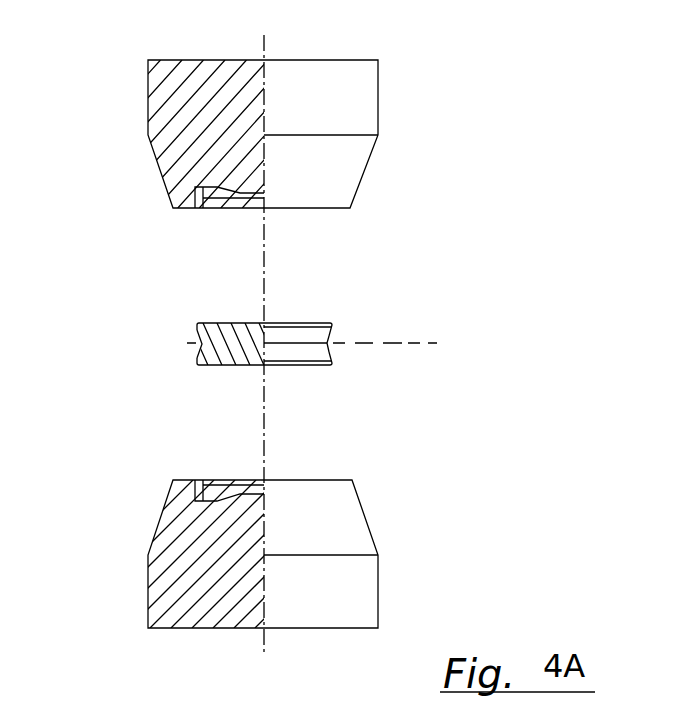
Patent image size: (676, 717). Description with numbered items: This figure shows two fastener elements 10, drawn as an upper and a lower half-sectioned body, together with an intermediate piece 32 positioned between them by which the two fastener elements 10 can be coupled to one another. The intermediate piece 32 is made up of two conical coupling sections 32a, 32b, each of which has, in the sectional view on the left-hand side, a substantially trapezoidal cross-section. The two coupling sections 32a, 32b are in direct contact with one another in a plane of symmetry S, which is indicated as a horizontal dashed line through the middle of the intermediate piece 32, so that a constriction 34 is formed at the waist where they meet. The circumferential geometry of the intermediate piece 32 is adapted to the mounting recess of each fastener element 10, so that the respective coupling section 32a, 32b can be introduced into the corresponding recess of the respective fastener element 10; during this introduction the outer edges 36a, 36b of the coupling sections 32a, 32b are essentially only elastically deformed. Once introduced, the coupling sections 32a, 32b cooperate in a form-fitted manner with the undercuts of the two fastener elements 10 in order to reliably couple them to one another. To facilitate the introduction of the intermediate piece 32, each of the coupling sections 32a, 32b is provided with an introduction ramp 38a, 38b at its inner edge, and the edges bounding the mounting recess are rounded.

The fastener element 10 is at (415, 88).
The intermediate piece 32 is at (277, 349).
The coupling section 32a is at (182, 325).
The coupling section 32b is at (177, 363).
The constriction 34 is at (185, 343).
The outer edge 36a is at (338, 325).
The outer edge 36b is at (335, 363).
The introduction ramp 38a is at (193, 322).
The introduction ramp 38b is at (193, 370).
The plane of symmetry S is at (417, 341).